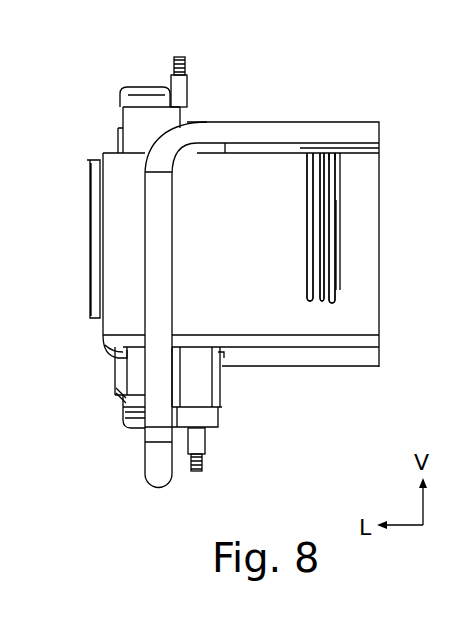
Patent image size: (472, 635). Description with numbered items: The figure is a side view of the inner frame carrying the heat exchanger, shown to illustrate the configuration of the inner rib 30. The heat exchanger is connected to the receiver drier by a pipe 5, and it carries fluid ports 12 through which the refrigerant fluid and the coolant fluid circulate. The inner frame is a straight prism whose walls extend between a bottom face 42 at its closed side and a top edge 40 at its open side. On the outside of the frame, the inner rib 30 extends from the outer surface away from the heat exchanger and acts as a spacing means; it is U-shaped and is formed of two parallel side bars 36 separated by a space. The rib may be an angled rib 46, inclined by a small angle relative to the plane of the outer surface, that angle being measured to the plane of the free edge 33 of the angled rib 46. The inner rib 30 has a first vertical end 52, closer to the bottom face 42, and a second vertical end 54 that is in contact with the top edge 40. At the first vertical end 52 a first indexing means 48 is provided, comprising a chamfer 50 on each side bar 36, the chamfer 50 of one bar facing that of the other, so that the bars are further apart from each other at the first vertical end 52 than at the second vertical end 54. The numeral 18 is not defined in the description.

The pipe 5 is at (223, 137).
The fluid port 12 is at (151, 118).
The connection 18 is at (293, 157).
The inner rib 30 is at (320, 153).
The free edge 33 is at (86, 182).
The side bar 36 is at (337, 153).
The top edge 40 is at (272, 147).
The bottom face 42 is at (222, 362).
The angled rib 46 is at (90, 297).
The first indexing means 48 is at (352, 281).
The chamfer 50 is at (325, 302).
The first vertical end 52 is at (335, 314).
The second vertical end 54 is at (330, 140).